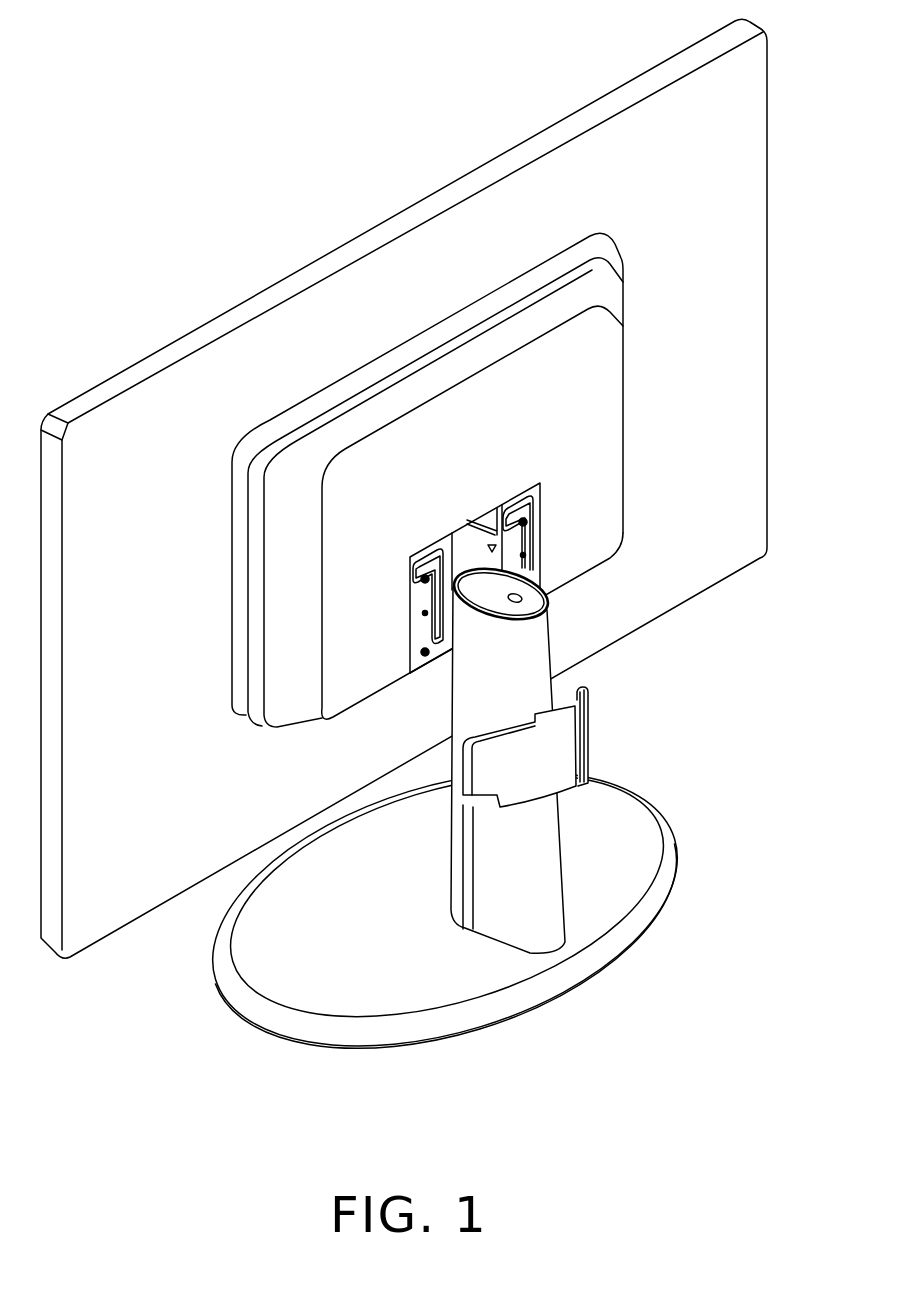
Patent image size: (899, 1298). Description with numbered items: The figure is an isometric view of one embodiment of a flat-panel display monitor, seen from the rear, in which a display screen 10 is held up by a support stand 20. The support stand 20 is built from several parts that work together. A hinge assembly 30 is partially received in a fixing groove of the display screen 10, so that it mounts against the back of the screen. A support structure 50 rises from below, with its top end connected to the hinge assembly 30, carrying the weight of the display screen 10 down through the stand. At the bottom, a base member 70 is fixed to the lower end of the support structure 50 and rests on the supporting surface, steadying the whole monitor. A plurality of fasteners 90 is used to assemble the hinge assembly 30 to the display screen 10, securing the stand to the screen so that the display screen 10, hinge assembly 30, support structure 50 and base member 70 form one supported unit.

The display screen 10 is at (688, 563).
The support stand 20 is at (487, 790).
The hinge assembly 30 is at (527, 542).
The support structure 50 is at (528, 657).
The base member 70 is at (630, 820).
The fasteners 90 is at (557, 703).